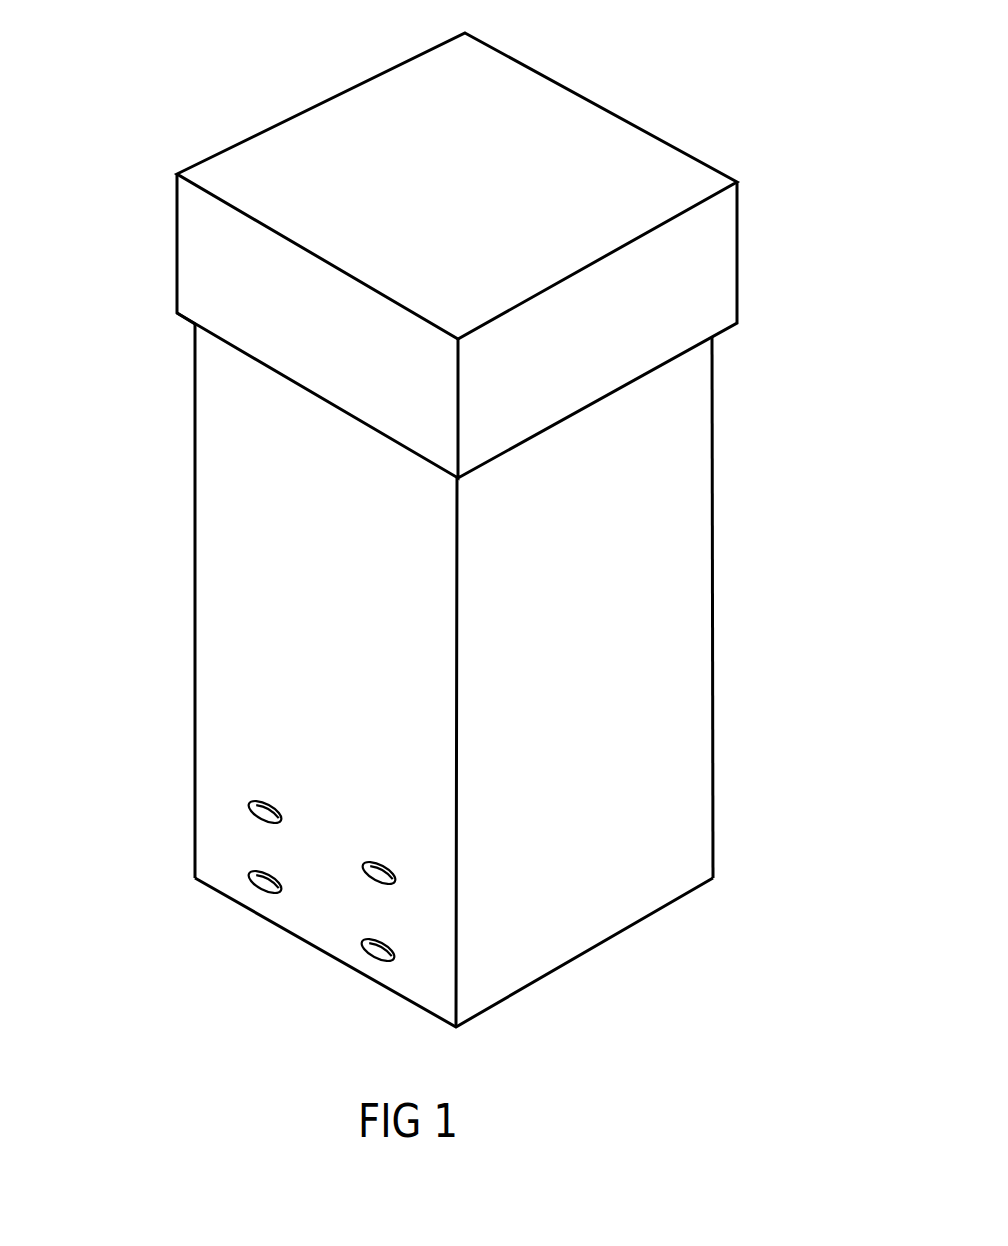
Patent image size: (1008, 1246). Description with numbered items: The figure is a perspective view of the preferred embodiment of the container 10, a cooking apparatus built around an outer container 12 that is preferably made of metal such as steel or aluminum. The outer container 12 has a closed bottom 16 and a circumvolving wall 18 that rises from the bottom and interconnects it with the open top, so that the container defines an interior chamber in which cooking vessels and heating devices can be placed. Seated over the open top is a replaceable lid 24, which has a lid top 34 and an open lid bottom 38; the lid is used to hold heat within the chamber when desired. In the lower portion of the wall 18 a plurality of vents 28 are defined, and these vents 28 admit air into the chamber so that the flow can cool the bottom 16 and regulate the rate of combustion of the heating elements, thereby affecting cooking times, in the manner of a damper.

The container 10 is at (118, 560).
The outer container 12 is at (728, 535).
The closed bottom 16 is at (595, 950).
The circumvolving wall 18 is at (660, 607).
The replaceable lid 24 is at (703, 250).
The vents 28 is at (250, 802).
The lid top 34 is at (540, 118).
The open lid bottom 38 is at (212, 333).